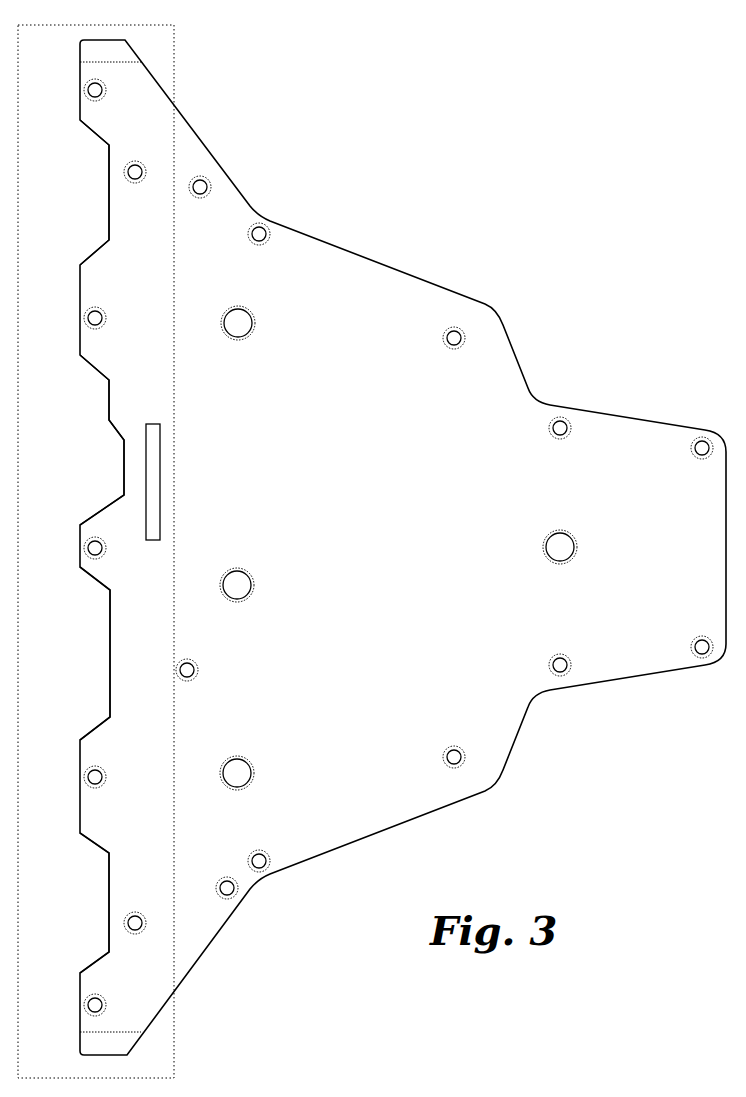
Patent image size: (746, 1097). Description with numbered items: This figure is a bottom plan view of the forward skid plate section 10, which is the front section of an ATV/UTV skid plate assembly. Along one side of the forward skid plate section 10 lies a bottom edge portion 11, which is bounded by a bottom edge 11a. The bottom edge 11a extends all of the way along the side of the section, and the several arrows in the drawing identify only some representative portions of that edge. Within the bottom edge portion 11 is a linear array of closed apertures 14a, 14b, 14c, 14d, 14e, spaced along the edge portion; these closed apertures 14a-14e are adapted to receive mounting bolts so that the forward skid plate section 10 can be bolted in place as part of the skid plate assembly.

The forward skid plate section 10 is at (377, 140).
The bottom edge portion 11 is at (175, 71).
The bottom edge 11a is at (113, 472).
The closed aperture 14a is at (97, 93).
The closed aperture 14b is at (97, 321).
The closed aperture 14c is at (97, 551).
The closed aperture 14d is at (97, 780).
The closed aperture 14e is at (95, 1003).